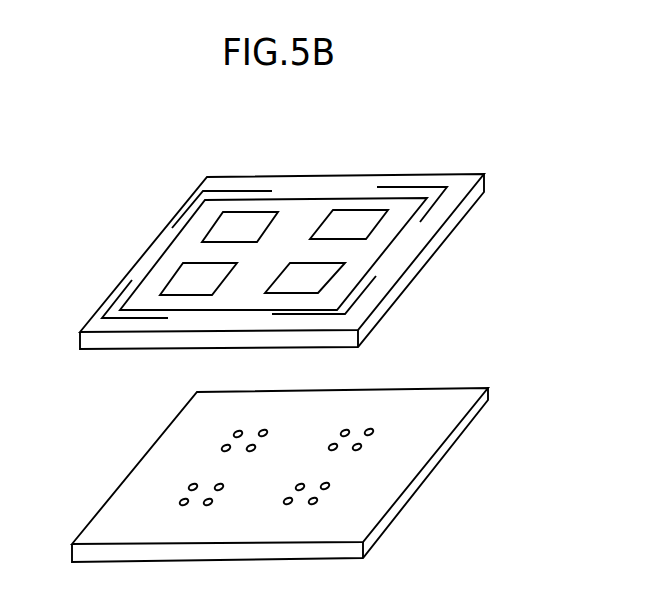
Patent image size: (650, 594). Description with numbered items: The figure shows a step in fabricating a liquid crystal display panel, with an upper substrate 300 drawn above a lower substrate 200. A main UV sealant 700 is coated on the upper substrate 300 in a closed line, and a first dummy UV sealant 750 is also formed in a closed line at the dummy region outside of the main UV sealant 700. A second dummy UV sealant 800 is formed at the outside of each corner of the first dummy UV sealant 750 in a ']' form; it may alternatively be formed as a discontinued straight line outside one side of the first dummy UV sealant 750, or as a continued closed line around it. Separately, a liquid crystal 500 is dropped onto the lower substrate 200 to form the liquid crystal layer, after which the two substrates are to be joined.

The lower substrate 200 is at (467, 430).
The upper substrate 300 is at (460, 215).
The liquid crystal 500 is at (362, 447).
The main UV sealant 700 is at (213, 228).
The first dummy UV sealant 750 is at (384, 250).
The second dummy UV sealant 800 is at (435, 187).